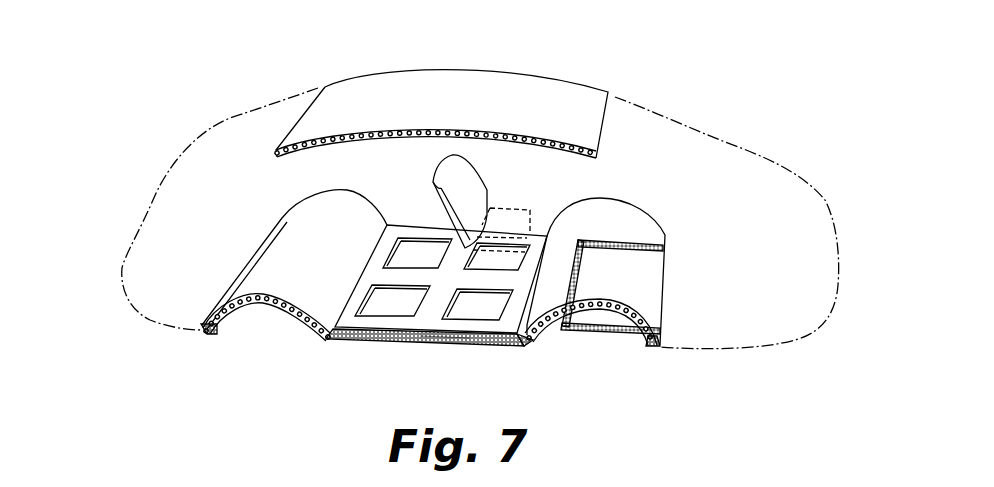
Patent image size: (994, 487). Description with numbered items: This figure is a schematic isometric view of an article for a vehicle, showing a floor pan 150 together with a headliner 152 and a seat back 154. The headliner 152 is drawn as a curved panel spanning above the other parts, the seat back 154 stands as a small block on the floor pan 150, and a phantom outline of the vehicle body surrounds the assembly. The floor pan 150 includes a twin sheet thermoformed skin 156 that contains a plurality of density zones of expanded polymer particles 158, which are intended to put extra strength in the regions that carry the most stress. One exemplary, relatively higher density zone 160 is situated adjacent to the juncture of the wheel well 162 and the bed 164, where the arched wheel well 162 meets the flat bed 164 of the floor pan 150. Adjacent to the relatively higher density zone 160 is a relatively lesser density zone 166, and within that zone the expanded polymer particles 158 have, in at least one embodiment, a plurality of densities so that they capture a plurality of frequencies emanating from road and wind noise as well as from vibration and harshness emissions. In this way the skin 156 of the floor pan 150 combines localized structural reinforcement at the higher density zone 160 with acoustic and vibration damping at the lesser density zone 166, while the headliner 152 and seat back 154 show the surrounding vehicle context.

The floor pan 150 is at (282, 245).
The headliner 152 is at (446, 60).
The seat back 154 is at (479, 178).
The twin sheet thermoformed skin 156 is at (303, 277).
The expanded polymer particles 158 is at (378, 342).
The relatively higher density zone 160 is at (540, 328).
The wheel well 162 is at (533, 345).
The bed 164 is at (462, 346).
The relatively lesser density zone 166 is at (556, 300).